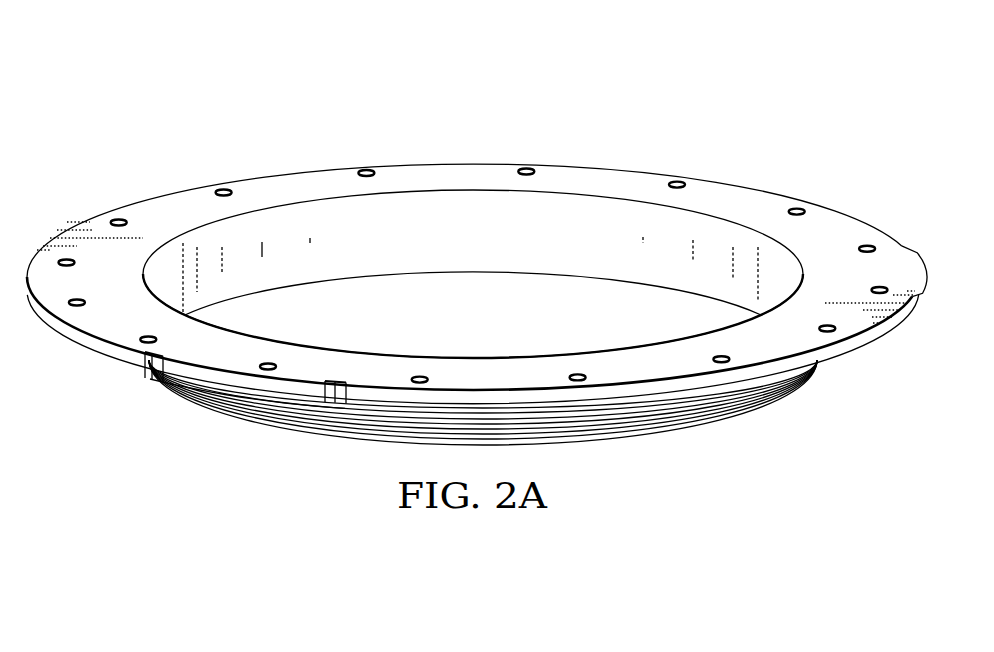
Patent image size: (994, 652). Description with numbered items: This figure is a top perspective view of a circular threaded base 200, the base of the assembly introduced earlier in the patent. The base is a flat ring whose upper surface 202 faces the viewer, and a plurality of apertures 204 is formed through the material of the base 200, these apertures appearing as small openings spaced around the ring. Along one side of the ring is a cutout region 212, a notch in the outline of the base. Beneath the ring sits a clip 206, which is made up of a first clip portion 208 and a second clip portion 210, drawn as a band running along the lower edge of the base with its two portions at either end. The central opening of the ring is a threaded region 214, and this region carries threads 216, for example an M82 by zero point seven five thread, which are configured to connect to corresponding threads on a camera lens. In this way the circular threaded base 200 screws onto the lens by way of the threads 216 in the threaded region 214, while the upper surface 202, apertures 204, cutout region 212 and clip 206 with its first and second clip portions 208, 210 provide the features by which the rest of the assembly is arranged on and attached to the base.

The circular threaded base 200 is at (204, 70).
The upper surface 202 is at (283, 180).
The plurality of apertures 204 is at (116, 216).
The clip 206 is at (231, 430).
The first clip portion 208 is at (326, 397).
The second clip portion 210 is at (155, 381).
The cutout region 212 is at (640, 166).
The threaded region 214 is at (495, 247).
The threads 216 is at (660, 423).